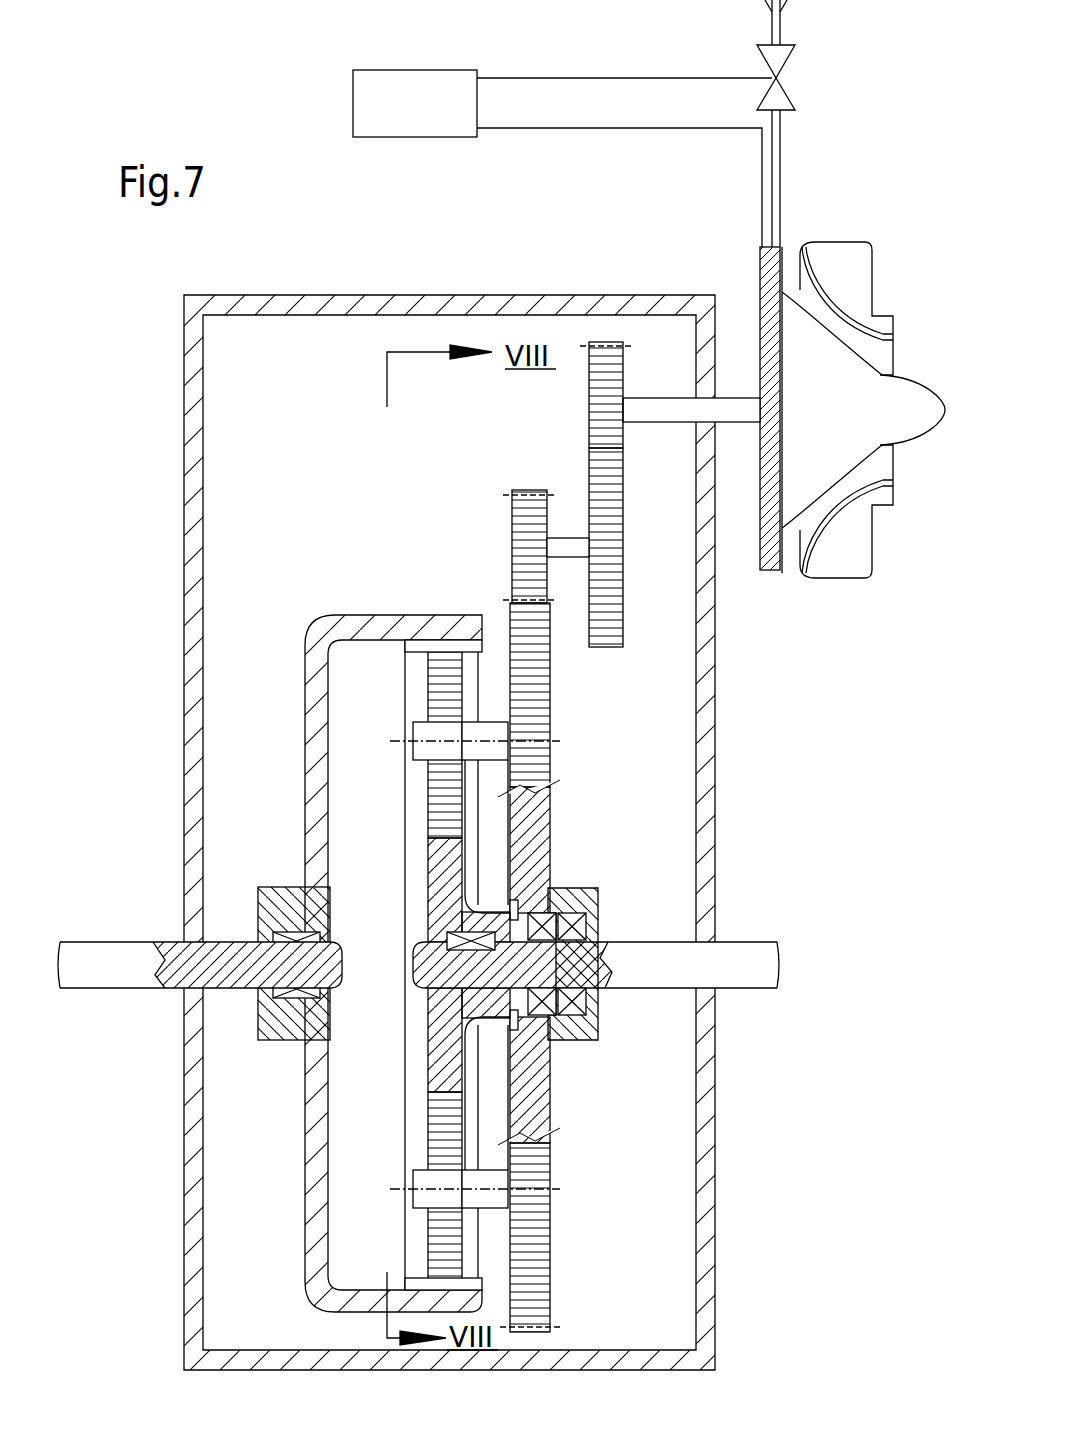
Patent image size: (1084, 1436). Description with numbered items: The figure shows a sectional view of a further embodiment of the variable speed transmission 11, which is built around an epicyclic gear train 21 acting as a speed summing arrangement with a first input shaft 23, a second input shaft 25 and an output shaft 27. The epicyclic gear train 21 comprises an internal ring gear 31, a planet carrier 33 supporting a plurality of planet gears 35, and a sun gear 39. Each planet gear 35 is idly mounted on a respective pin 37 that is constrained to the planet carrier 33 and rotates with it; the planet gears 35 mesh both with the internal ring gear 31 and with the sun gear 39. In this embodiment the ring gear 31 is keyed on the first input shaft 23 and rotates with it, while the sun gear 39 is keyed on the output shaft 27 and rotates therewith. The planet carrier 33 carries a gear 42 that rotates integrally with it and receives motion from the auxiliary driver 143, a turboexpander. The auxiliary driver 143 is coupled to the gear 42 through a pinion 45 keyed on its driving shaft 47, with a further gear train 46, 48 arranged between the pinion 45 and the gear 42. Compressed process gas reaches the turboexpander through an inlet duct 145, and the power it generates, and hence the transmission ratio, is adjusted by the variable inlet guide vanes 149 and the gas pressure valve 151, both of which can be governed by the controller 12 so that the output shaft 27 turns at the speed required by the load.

The variable speed transmission 11 is at (132, 338).
The controller 12 is at (386, 125).
The epicyclic gear train 21 is at (295, 612).
The first input shaft 23 is at (130, 950).
The second input shaft 25 is at (568, 1032).
The output shaft 27 is at (655, 960).
The ring gear 31 is at (390, 628).
The planet carrier 33 is at (550, 706).
The planet gear 35 is at (440, 796).
The pin 37 is at (413, 740).
The sun gear 39 is at (445, 1021).
The gear 42 is at (565, 1330).
The pinion 45 is at (600, 408).
The gear of further gear train 46 is at (620, 600).
The driving shaft 47 is at (681, 405).
The gear of further gear train 48 is at (512, 510).
The auxiliary driver 143 is at (743, 232).
The inlet duct 145 is at (789, 150).
The variable inlet guide vanes 149 is at (766, 572).
The gas pressure valve 151 is at (779, 98).